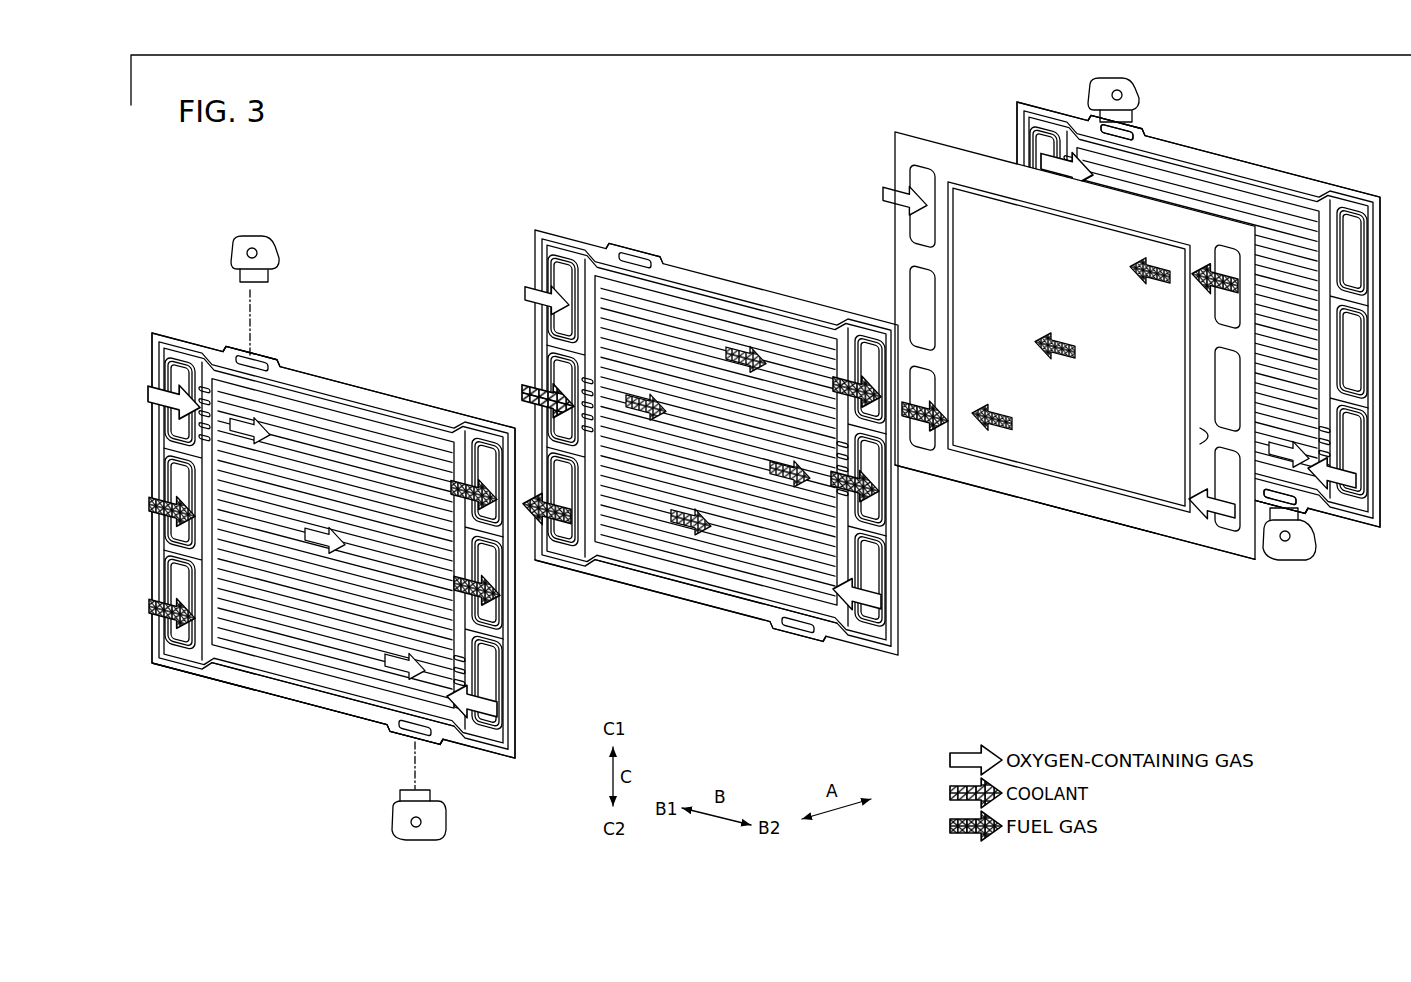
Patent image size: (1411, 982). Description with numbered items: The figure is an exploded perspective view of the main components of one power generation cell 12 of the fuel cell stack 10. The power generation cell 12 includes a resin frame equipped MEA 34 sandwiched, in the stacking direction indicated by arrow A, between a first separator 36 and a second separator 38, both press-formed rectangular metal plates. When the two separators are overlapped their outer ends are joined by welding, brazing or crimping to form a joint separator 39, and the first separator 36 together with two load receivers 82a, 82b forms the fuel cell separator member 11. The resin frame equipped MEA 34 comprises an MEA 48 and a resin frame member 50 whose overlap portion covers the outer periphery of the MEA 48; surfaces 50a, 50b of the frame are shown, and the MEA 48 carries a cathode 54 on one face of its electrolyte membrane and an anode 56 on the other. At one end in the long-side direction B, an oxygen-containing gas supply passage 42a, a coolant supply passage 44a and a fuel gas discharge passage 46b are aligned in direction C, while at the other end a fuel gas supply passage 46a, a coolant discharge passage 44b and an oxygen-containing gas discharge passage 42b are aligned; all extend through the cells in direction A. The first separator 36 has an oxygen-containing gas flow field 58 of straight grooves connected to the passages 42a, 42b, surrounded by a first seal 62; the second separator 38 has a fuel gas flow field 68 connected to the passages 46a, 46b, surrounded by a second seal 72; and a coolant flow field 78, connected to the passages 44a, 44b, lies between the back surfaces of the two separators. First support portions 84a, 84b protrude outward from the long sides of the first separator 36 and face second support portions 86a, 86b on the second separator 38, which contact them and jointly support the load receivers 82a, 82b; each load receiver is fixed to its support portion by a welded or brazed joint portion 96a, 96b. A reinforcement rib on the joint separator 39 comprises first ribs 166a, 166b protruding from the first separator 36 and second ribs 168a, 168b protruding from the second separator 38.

The fuel cell stack 10 is at (430, 160).
The fuel cell separator member 11 is at (157, 325).
The power generation cell 12 is at (674, 170).
The resin frame equipped MEA 34 is at (1058, 555).
The first separator 36 is at (181, 331).
The second separator 38 is at (528, 242).
The joint separator 39 is at (492, 213).
The oxygen-containing gas supply passage 42a is at (183, 366).
The oxygen-containing gas discharge passage 42b is at (499, 724).
The coolant supply passage 44a is at (192, 530).
The coolant discharge passage 44b is at (497, 613).
The fuel gas supply passage 46a is at (486, 458).
The fuel gas discharge passage 46b is at (182, 636).
The MEA 48 is at (1012, 476).
The resin frame member 50 is at (1050, 490).
The outer frame portion first layer 50a is at (1147, 518).
The outer frame portion second layer 50b is at (1124, 510).
The cathode 54 is at (1198, 435).
The anode 56 is at (1080, 463).
The oxygen-containing gas flow field 58 is at (300, 655).
The first seal 62 is at (388, 402).
The fuel gas flow field 68 is at (625, 537).
The second seal 72 is at (733, 294).
The coolant flow field 78 is at (772, 356).
The load receiver 82a is at (282, 254).
The load receiver 82b is at (447, 823).
The first support portion 84a is at (283, 361).
The first support portion 84b is at (440, 742).
The second support portion 86a is at (617, 240).
The second support portion 86b is at (822, 640).
The joint portion 96a is at (1114, 128).
The joint portion 96b is at (1284, 519).
The first rib 166a is at (258, 358).
The first rib 166b is at (406, 730).
The second rib 168a is at (645, 265).
The second rib 168b is at (800, 626).